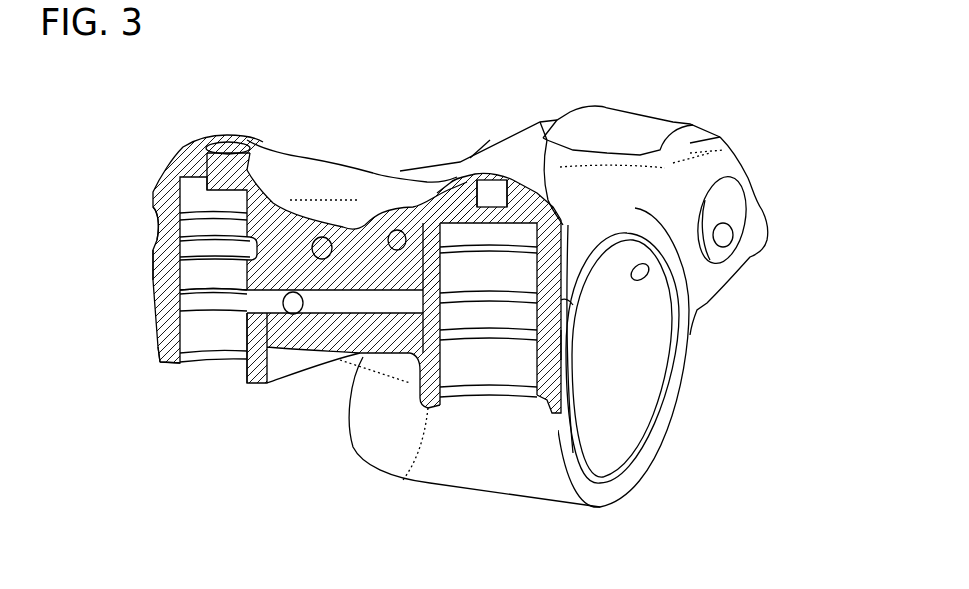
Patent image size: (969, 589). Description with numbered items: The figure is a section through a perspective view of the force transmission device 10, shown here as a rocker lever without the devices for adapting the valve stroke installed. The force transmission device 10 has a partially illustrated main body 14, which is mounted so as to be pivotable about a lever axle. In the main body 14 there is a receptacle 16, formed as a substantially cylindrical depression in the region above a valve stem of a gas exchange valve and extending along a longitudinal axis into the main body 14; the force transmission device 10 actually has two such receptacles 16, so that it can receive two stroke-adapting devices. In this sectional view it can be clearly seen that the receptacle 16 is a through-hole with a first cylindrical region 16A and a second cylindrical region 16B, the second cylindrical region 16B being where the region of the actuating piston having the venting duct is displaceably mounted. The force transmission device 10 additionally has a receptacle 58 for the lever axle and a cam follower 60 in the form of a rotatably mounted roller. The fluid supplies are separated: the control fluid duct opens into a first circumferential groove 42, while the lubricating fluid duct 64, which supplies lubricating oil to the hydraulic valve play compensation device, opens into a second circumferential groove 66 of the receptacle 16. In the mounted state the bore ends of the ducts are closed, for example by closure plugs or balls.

The force transmission device 10 is at (731, 313).
The main body 14 is at (547, 120).
The receptacle 16 is at (210, 337).
The first cylindrical region 16A is at (227, 310).
The second cylindrical region 16B is at (460, 165).
The first circumferential groove 42 is at (147, 225).
The receptacle for a lever axle 58 is at (645, 393).
The cam follower 60 is at (700, 120).
The lubricating fluid duct 64 is at (365, 380).
The second circumferential groove 66 is at (152, 278).